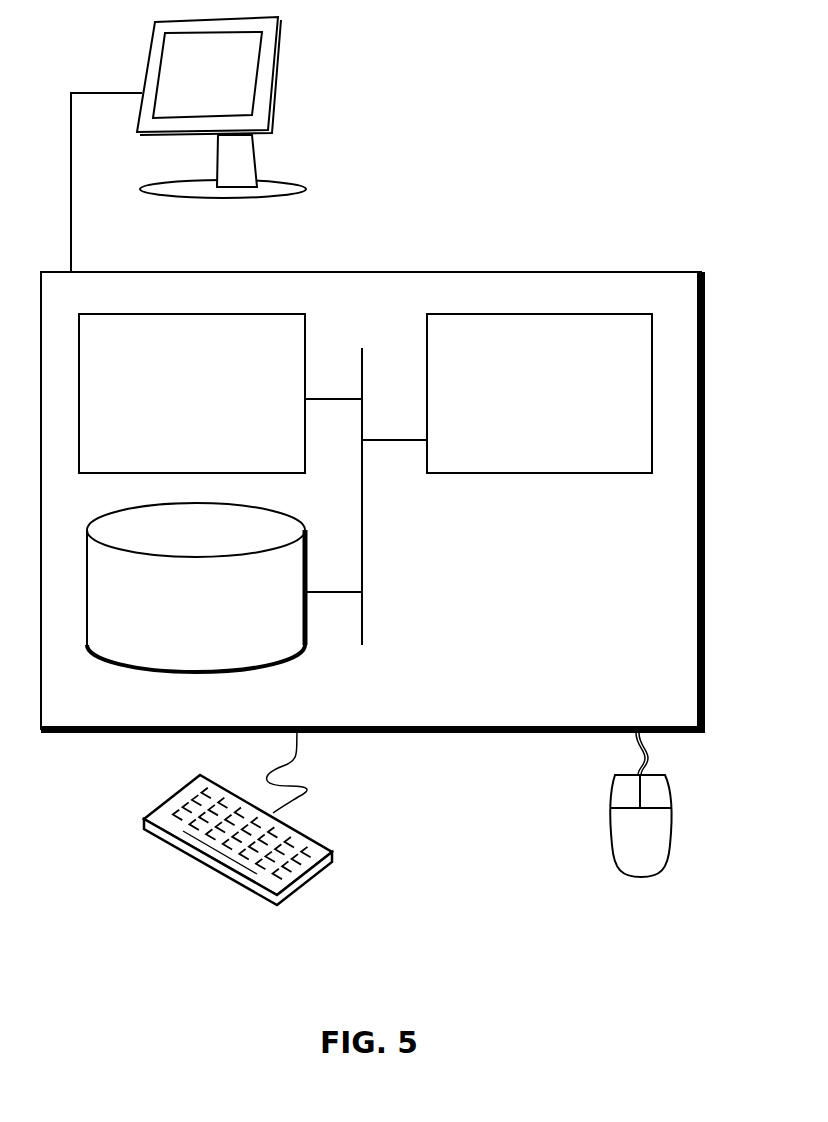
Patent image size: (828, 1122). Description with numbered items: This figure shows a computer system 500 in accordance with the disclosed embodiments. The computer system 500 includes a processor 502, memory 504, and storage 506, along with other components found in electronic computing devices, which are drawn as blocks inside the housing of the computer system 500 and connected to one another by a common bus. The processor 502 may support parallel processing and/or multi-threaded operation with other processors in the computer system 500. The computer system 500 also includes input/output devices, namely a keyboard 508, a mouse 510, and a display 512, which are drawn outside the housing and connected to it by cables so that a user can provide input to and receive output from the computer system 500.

The computer system 500 is at (415, 250).
The processor 502 is at (523, 406).
The memory 504 is at (173, 404).
The storage 506 is at (180, 618).
The keyboard 508 is at (165, 838).
The mouse 510 is at (621, 847).
The display 512 is at (188, 144).